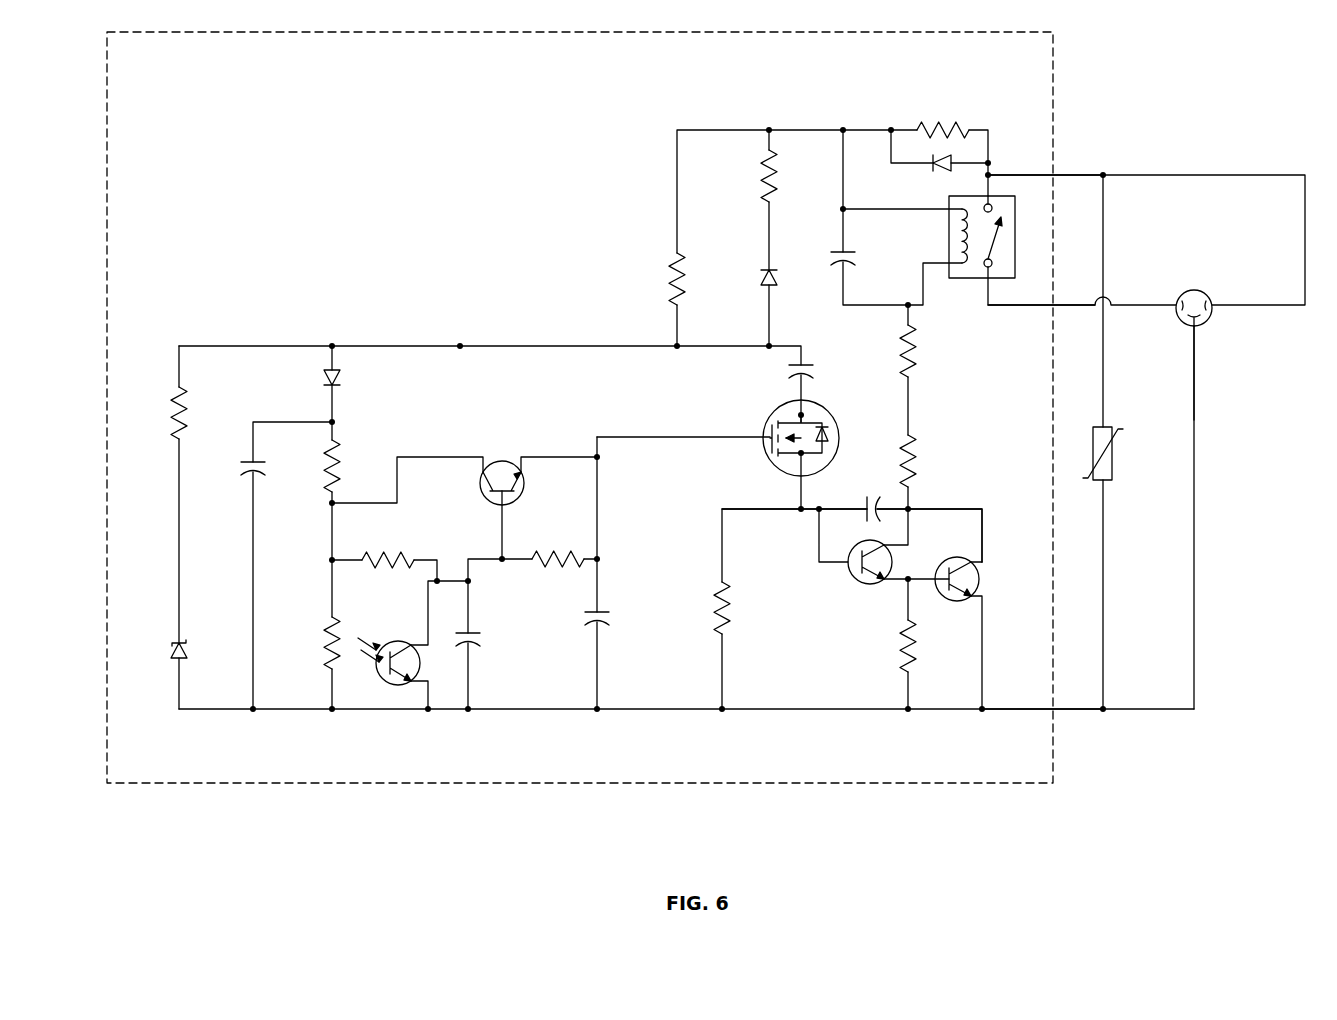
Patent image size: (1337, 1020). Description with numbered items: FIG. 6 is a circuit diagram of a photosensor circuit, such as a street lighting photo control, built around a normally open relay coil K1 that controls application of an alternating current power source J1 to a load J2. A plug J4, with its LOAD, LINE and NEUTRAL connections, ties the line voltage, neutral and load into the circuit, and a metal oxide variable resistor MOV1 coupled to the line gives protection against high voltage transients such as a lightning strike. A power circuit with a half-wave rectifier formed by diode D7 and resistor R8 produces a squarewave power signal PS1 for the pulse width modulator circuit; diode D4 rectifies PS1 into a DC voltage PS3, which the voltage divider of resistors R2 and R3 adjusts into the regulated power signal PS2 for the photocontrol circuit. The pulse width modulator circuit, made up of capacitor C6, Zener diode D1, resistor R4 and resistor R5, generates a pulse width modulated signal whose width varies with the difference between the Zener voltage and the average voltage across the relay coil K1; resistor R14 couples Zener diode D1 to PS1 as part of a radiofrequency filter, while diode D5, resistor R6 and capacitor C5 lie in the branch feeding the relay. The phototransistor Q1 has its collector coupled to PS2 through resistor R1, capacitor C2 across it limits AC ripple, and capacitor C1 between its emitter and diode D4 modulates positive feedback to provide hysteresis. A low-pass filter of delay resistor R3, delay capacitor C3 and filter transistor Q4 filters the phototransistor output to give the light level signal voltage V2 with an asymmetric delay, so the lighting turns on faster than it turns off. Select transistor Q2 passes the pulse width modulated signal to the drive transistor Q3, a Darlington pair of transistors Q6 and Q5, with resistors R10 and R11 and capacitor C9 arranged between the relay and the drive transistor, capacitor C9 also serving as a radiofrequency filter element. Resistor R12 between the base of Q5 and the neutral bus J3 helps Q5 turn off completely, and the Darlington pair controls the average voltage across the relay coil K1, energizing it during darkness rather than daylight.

The power signal PS1 is at (460, 346).
The regulated power signal PS2 is at (332, 560).
The DC voltage signal PS3 is at (332, 422).
The resistor R14 is at (201, 413).
The diode D4 is at (348, 379).
The first capacitor C1 is at (268, 467).
The resistor R2 is at (347, 466).
The first resistor R1 is at (388, 548).
The resistor R3 is at (438, 599).
The phototransistor Q1 is at (389, 648).
The Zener diode D1 is at (197, 649).
The filter transistor Q4 is at (502, 467).
The second capacitor C2 is at (484, 645).
The delay capacitor C3 is at (613, 619).
The light level signal voltage V2 is at (683, 439).
The select transistor Q2 is at (816, 438).
The first capacitor C6 is at (819, 373).
The fourth resistor R6 is at (784, 176).
The first resistor R4 is at (692, 279).
The diode D5 is at (789, 277).
The second capacitor C5 is at (858, 261).
The second resistor R8 is at (943, 118).
The first diode D7 is at (933, 176).
The normally open relay coil K1 is at (967, 237).
The resistor R10 is at (929, 351).
The resistor R11 is at (929, 461).
The capacitor C9 is at (869, 498).
The drive transistor Q3 is at (984, 513).
The third resistor R5 is at (738, 608).
The first transistor Q6 is at (870, 579).
The second transistor Q5 is at (976, 579).
The resistor R12 is at (929, 646).
The AC power source J1 is at (1045, 161).
The load J2 is at (1041, 292).
The neutral bus J3 is at (1042, 697).
The plug J4 is at (1176, 380).
The metal oxide variable resistor MOV1 is at (1131, 457).
The load connection LOAD is at (1138, 291).
The line connection LINE is at (1216, 303).
The neutral connection NEUTRAL is at (1244, 350).